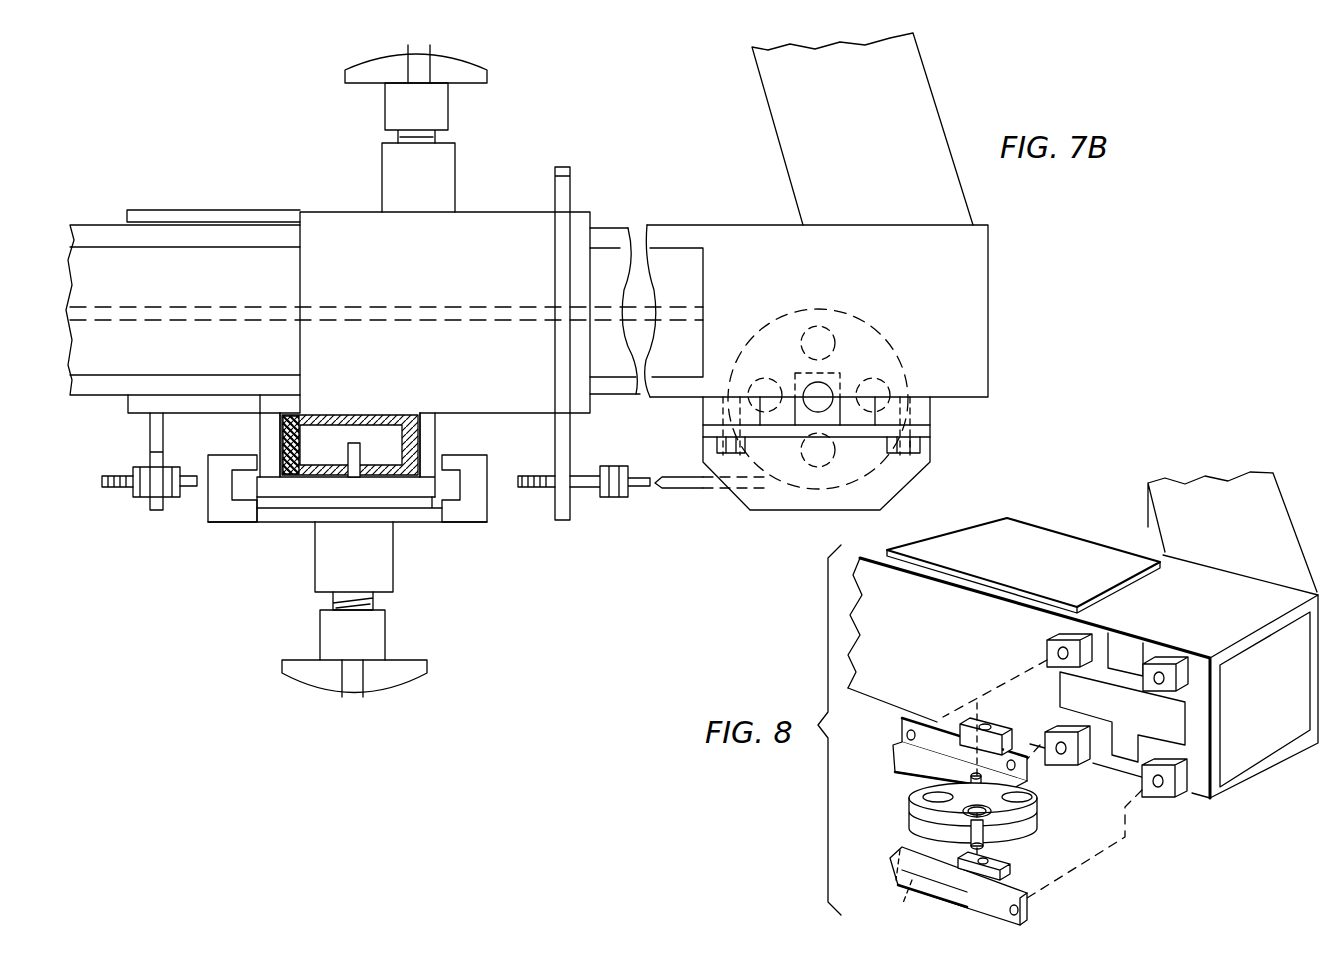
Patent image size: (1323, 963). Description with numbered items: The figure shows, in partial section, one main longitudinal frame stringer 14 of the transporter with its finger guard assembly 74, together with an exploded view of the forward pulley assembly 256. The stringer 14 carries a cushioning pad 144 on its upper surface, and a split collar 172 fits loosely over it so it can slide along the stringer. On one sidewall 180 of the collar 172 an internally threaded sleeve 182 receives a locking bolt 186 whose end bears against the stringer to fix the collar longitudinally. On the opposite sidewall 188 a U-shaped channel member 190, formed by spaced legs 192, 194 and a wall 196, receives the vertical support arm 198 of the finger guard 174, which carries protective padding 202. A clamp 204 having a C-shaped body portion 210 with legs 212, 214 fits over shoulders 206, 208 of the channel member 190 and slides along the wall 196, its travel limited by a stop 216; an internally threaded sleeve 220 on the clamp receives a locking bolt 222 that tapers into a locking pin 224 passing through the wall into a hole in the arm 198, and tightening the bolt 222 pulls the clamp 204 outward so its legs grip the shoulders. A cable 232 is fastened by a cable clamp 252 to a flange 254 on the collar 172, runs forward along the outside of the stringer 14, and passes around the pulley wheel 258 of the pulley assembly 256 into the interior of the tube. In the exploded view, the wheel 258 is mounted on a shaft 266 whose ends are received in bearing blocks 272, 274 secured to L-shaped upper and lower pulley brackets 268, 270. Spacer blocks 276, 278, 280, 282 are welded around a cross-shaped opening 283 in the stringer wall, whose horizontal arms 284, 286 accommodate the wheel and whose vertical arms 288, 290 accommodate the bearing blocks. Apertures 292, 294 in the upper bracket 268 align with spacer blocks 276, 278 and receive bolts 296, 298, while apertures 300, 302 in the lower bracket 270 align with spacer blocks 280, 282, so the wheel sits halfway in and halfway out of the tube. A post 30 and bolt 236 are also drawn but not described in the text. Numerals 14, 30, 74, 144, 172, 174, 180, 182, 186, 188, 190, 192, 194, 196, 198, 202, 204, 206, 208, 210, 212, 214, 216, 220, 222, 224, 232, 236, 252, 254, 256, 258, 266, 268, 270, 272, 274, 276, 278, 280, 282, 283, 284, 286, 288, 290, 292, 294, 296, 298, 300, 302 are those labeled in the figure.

In FIG. 7B, the main frame stringer 14 is at (130, 225).
In FIG. 8, the main frame stringer 14 is at (883, 593).
In FIG. 7B, the post 30 is at (790, 140).
In FIG. 8, the post 30 is at (1220, 496).
In FIG. 7B, the finger guard assembly 74 is at (483, 577).
In FIG. 7B, the cushioning pad 144 is at (152, 302).
In FIG. 8, the cushioning pad 144 is at (1050, 558).
In FIG. 7B, the split collar 172 is at (425, 312).
In FIG. 7B, the finger guard 174 is at (415, 412).
In FIG. 7B, the sidewall 180 is at (165, 212).
In FIG. 7B, the internally threaded sleeve 182 is at (440, 187).
In FIG. 7B, the locking bolt 186 is at (420, 140).
In FIG. 7B, the sidewall 188 is at (130, 408).
In FIG. 7B, the channel member 190 is at (425, 425).
In FIG. 7B, the leg 192 is at (258, 440).
In FIG. 7B, the leg 194 is at (440, 438).
In FIG. 7B, the wall 196 is at (395, 505).
In FIG. 7B, the vertical support arm 198 is at (405, 430).
In FIG. 7B, the protective padding 202 is at (295, 420).
In FIG. 7B, the clamp 204 is at (268, 538).
In FIG. 7B, the shoulder 206 is at (250, 487).
In FIG. 7B, the shoulder 208 is at (440, 505).
In FIG. 7B, the body portion 210 is at (298, 520).
In FIG. 7B, the leg 212 is at (210, 508).
In FIG. 7B, the leg 214 is at (485, 495).
In FIG. 7B, the stop 216 is at (352, 505).
In FIG. 7B, the internally threaded sleeve 220 is at (312, 580).
In FIG. 7B, the locking bolt 222 is at (368, 602).
In FIG. 7B, the locking pin 224 is at (355, 440).
In FIG. 7B, the cable 232 is at (690, 498).
In FIG. 7B, the bolt 236 is at (152, 505).
In FIG. 7B, the cable clamp 252 is at (615, 498).
In FIG. 7B, the flange 254 is at (591, 341).
In FIG. 7B, the forward pulley assembly 256 is at (878, 480).
In FIG. 8, the forward pulley assembly 256 is at (1095, 832).
In FIG. 7B, the pulley wheel 258 is at (862, 325).
In FIG. 8, the pulley wheel 258 is at (1008, 817).
In FIG. 7B, the shaft 266 is at (830, 377).
In FIG. 8, the shaft 266 is at (925, 812).
In FIG. 7B, the upper pulley bracket 268 is at (760, 500).
In FIG. 8, the upper pulley bracket 268 is at (898, 750).
In FIG. 8, the lower pulley bracket 270 is at (962, 885).
In FIG. 7B, the bearing block 272 is at (802, 378).
In FIG. 8, the bearing block 272 is at (987, 728).
In FIG. 8, the bearing block 274 is at (1001, 874).
In FIG. 7B, the spacer block 276 is at (712, 411).
In FIG. 8, the spacer block 276 is at (1047, 645).
In FIG. 7B, the spacer block 278 is at (925, 411).
In FIG. 8, the spacer block 278 is at (1165, 665).
In FIG. 8, the spacer block 280 is at (1068, 766).
In FIG. 8, the spacer block 282 is at (1165, 795).
In FIG. 8, the cross-shaped opening 283 is at (1170, 715).
In FIG. 8, the horizontal arm 284 is at (1093, 722).
In FIG. 8, the horizontal arm 286 is at (1139, 716).
In FIG. 8, the vertical arm 288 is at (1120, 648).
In FIG. 8, the vertical arm 290 is at (1125, 760).
In FIG. 8, the aperture 292 is at (912, 730).
In FIG. 8, the aperture 294 is at (1013, 760).
In FIG. 7B, the bolt 296 is at (716, 447).
In FIG. 7B, the bolt 298 is at (925, 447).
In FIG. 8, the aperture 300 is at (912, 888).
In FIG. 8, the aperture 302 is at (1022, 912).